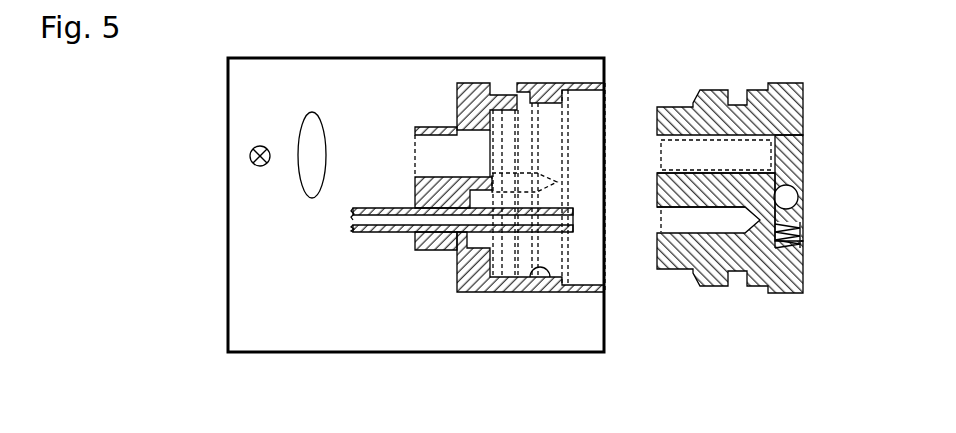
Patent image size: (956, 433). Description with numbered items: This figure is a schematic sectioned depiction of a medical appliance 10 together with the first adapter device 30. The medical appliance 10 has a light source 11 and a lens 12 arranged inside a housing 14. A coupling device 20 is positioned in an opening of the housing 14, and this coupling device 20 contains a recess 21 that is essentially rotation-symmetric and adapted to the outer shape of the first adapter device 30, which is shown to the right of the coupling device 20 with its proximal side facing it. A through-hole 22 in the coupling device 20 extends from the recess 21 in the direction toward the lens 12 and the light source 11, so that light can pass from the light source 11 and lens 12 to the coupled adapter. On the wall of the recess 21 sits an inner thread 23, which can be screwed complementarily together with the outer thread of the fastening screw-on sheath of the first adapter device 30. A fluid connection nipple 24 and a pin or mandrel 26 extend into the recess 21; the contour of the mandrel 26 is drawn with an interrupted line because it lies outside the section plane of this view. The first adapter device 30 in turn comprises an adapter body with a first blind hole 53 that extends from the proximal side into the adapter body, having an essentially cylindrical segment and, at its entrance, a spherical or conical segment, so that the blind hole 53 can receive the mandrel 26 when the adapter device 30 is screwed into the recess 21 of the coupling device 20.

The medical appliance 10 is at (625, 328).
The light source 11 is at (248, 157).
The lens 12 is at (300, 190).
The housing 14 is at (228, 298).
The coupling device 20 is at (604, 86).
The recess 21 is at (575, 138).
The through-hole 22 is at (440, 140).
The inner thread 23 is at (540, 268).
The fluid connection nipple 24 is at (578, 233).
The mandrel 26 is at (532, 173).
The first adapter device 30 is at (762, 292).
The first blind hole 53 is at (697, 170).